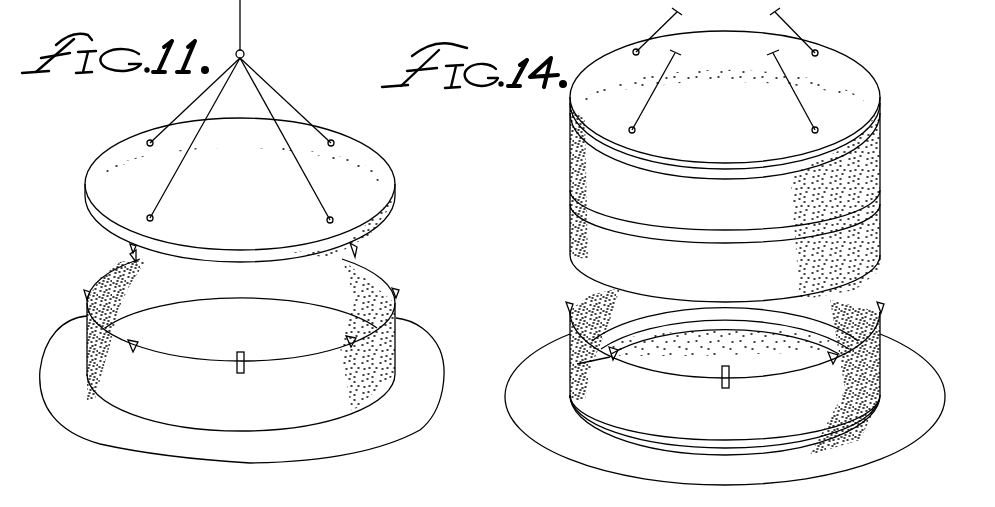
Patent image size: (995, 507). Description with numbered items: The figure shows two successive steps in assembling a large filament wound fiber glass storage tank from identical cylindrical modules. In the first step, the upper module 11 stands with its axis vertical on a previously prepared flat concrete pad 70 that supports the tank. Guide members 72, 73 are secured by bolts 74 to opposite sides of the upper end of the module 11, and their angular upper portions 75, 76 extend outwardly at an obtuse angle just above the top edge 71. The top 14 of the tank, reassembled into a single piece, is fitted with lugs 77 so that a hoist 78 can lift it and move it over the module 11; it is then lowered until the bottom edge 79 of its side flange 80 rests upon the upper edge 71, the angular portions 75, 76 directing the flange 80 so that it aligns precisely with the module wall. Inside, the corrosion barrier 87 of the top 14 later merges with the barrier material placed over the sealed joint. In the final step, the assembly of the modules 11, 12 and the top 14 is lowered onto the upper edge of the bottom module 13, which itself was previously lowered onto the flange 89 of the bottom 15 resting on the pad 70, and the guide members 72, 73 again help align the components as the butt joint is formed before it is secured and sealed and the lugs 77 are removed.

In FIG. 11, the upper module 11 is at (404, 321).
In FIG. 14, the upper module 11 is at (884, 141).
In FIG. 14, the module 12 is at (884, 202).
In FIG. 14, the bottom module 13 is at (884, 342).
In FIG. 14, the top 14 is at (855, 73).
In FIG. 14, the bottom 15 is at (727, 357).
In FIG. 11, the flat pad 70 is at (428, 358).
In FIG. 14, the flat pad 70 is at (568, 452).
In FIG. 11, the top edge 71 is at (378, 273).
In FIG. 11, the guide member 72 is at (90, 372).
In FIG. 11, the guide member 73 is at (140, 258).
In FIG. 11, the bolts 74 is at (246, 374).
In FIG. 11, the angular upper portion 75 is at (128, 248).
In FIG. 14, the angular upper portion 75 is at (577, 364).
In FIG. 11, the angular upper portion 76 is at (92, 297).
In FIG. 14, the angular upper portion 76 is at (620, 352).
In FIG. 11, the lugs 77 is at (145, 142).
In FIG. 11, the hoist 78 is at (244, 29).
In FIG. 14, the hoist 78 is at (665, 26).
In FIG. 11, the bottom edge 79 is at (367, 238).
In FIG. 11, the side flange 80 is at (105, 214).
In FIG. 14, the side flange 80 is at (578, 132).
In FIG. 14, the corrosion barrier 87 is at (585, 152).
In FIG. 14, the flange 89 is at (808, 338).